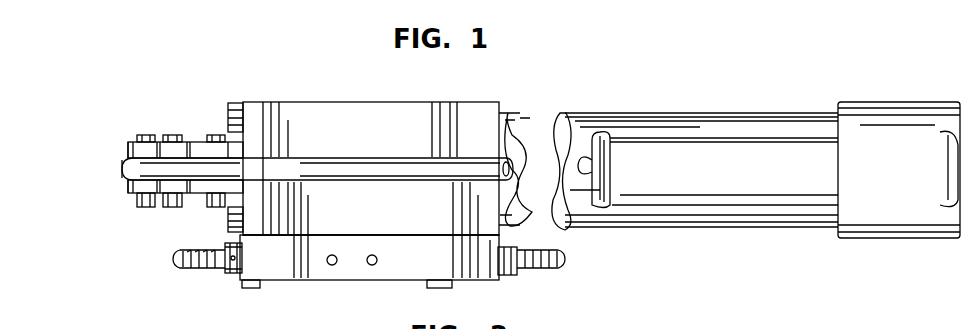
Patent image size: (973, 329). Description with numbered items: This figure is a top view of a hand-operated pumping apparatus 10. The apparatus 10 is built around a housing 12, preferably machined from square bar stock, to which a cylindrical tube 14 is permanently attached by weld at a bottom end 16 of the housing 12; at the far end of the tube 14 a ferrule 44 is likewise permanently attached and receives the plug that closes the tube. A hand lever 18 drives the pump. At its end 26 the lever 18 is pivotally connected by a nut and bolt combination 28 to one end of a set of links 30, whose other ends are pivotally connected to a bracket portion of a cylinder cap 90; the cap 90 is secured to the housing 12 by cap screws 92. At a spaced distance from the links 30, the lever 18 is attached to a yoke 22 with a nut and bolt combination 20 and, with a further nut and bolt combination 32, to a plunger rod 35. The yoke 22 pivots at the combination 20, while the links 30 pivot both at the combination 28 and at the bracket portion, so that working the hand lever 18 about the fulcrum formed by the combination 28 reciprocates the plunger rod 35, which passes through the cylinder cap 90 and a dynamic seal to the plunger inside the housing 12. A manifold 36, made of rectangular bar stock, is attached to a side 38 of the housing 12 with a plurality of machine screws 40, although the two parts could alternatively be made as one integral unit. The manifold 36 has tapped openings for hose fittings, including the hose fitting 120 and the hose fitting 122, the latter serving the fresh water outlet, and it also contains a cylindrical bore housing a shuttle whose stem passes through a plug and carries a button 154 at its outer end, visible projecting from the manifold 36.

The pumping apparatus 10 is at (665, 98).
The housing 12 is at (313, 101).
The cylindrical tube 14 is at (728, 113).
The bottom end 16 is at (578, 106).
The hand lever 18 is at (373, 160).
The nut and bolt combination 20 is at (165, 135).
The yoke 22 is at (194, 142).
The end 26 is at (125, 172).
The nut and bolt combination 28 is at (145, 209).
The links 30 is at (128, 148).
The nut and bolt combination 32 is at (215, 134).
The plunger rod 35 is at (232, 148).
The manifold 36 is at (378, 272).
The side 38 is at (412, 240).
The machine screws 40 is at (262, 284).
The ferrule 44 is at (884, 112).
The cylinder cap 90 is at (253, 102).
The cap screws 92 is at (232, 108).
The hose fitting 120 is at (190, 262).
The hose fitting 122 is at (556, 264).
The button 154 is at (228, 268).